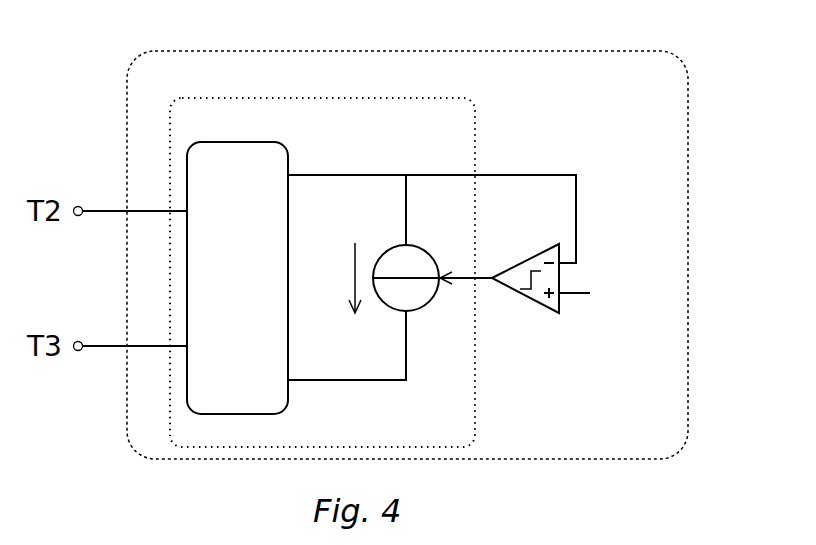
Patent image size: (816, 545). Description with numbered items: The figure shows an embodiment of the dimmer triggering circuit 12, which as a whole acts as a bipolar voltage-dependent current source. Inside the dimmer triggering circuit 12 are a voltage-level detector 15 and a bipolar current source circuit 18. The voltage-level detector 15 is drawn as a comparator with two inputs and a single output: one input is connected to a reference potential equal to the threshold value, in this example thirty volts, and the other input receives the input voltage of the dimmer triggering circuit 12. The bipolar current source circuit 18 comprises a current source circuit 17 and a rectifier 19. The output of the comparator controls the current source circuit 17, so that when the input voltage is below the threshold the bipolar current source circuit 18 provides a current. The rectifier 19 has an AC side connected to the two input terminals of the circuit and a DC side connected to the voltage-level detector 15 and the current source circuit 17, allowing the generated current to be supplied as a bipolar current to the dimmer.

The dimmer triggering circuit 12 is at (685, 80).
The voltage-level detector 15 is at (540, 305).
The current source circuit 17 is at (395, 248).
The bipolar current source circuit 18 is at (475, 125).
The rectifier 19 is at (270, 142).